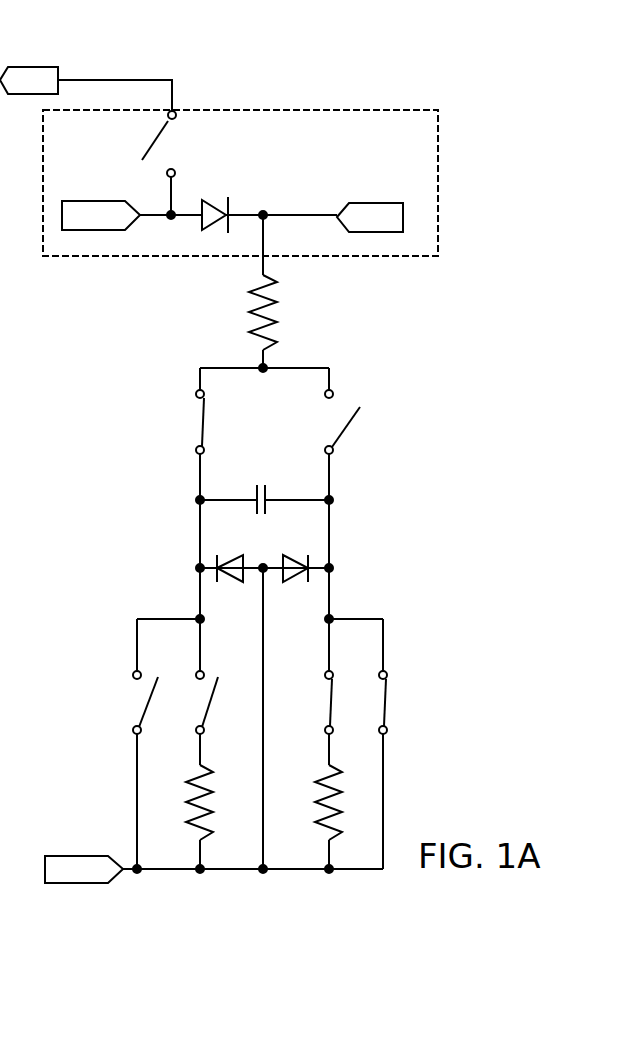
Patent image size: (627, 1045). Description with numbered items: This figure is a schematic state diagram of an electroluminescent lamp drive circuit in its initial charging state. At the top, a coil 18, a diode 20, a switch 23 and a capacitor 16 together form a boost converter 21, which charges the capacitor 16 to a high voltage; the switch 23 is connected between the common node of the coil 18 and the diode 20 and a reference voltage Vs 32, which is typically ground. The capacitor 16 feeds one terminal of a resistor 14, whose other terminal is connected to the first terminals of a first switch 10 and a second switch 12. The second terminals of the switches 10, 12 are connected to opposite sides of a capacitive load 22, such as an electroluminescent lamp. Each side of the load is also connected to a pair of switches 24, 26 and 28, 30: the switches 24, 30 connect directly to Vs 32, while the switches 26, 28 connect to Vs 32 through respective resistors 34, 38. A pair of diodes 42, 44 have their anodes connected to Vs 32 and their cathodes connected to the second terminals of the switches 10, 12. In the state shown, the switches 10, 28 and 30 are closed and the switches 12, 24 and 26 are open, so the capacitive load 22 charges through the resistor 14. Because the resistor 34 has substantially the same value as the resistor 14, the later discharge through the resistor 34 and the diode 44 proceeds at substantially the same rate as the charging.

The reference voltage Vs 32 is at (22, 95).
The boost converter 21 is at (438, 166).
The switch 23 is at (158, 133).
The coil 18 is at (95, 200).
The diode 20 is at (213, 200).
The capacitor 16 is at (368, 201).
The resistor 14 is at (277, 318).
The first switch 10 is at (200, 431).
The second switch 12 is at (349, 428).
The capacitive load 22 is at (263, 515).
The diode 42 is at (218, 572).
The diode 44 is at (310, 572).
The switch 24 is at (134, 733).
The switch 26 is at (206, 733).
The switch 28 is at (333, 733).
The switch 30 is at (387, 733).
The resistor 34 is at (210, 820).
The resistor 38 is at (338, 820).